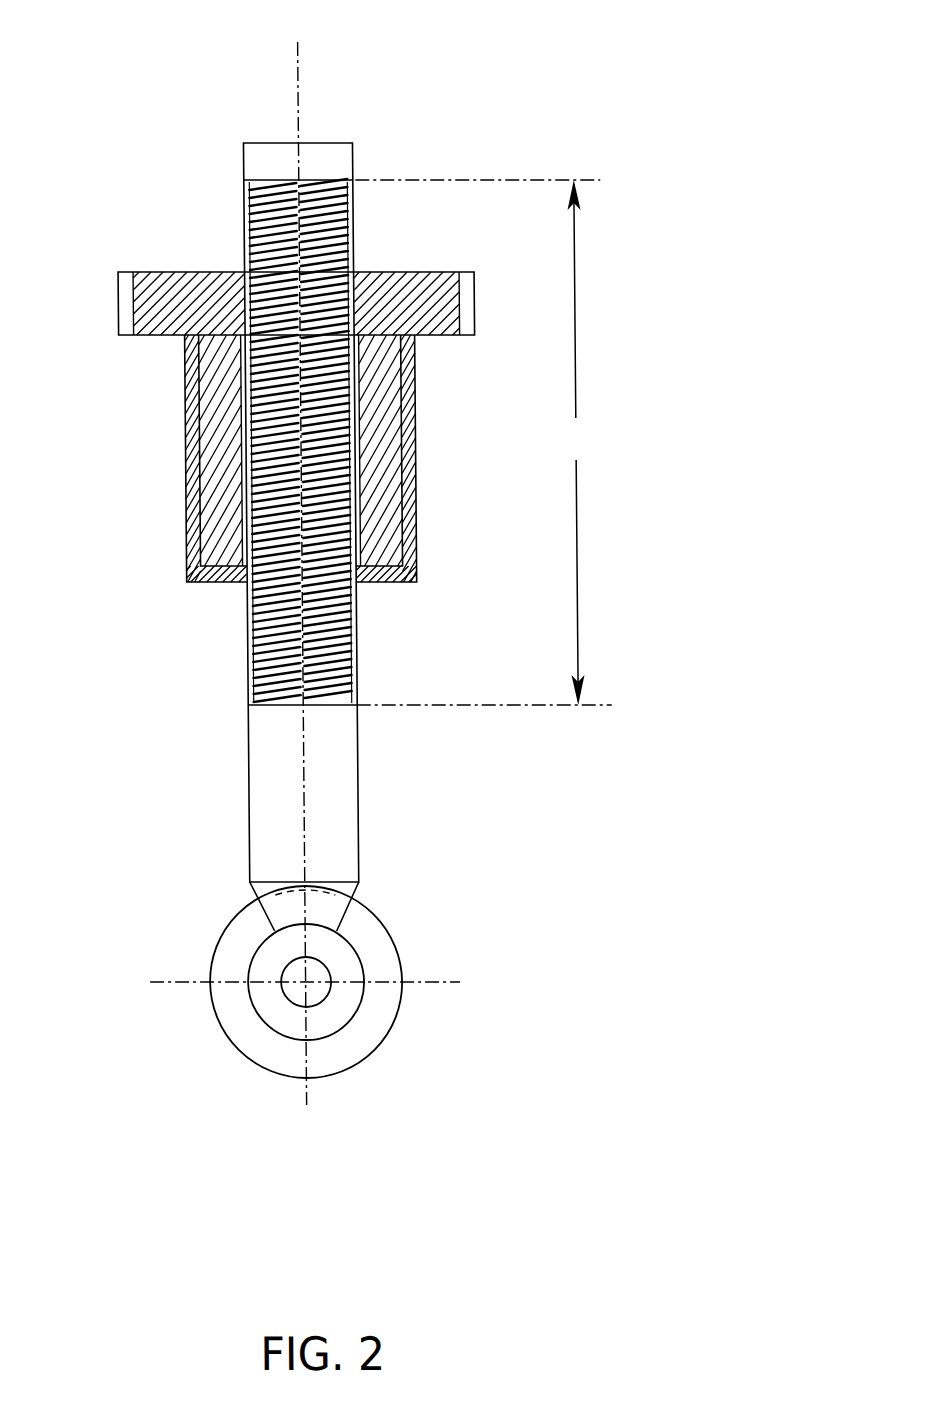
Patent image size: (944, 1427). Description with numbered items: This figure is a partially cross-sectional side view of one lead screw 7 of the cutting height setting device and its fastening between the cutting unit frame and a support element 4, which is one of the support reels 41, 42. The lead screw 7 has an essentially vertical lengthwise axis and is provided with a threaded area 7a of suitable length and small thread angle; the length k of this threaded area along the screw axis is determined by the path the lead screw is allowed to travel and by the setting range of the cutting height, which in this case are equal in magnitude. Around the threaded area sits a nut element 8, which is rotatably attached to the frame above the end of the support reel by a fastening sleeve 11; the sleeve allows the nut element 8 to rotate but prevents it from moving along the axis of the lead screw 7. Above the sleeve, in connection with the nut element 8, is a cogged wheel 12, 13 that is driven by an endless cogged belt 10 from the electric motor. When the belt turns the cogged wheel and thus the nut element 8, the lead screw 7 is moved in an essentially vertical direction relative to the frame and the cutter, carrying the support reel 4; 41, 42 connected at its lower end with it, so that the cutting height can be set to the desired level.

The support element 4 is at (224, 980).
The first support reel 41 is at (224, 980).
The second support reel 42 is at (213, 952).
The lead screw 7 is at (280, 158).
The threaded area 7a is at (266, 678).
The nut element 8 is at (217, 428).
The cogged belt 10 is at (127, 300).
The fastening sleeve 11 is at (197, 520).
The cogged wheel 12 is at (285, 252).
The cogged wheel 13 is at (209, 287).
The length of the threaded area k is at (481, 442).